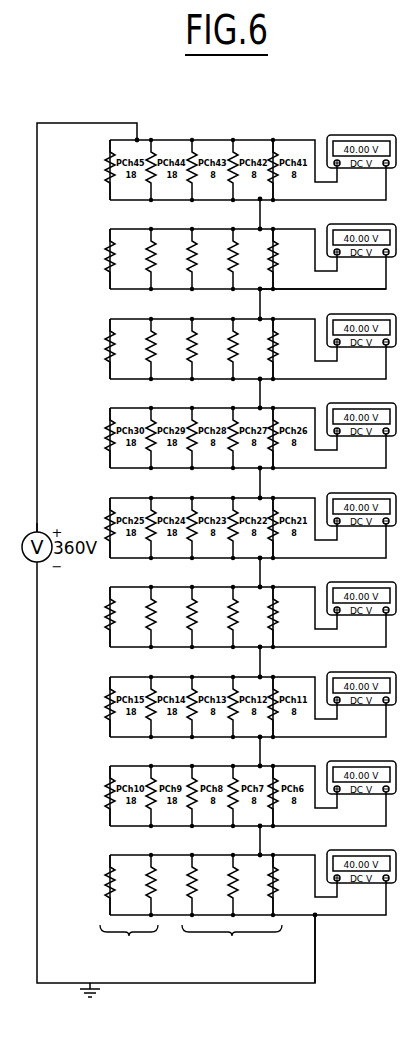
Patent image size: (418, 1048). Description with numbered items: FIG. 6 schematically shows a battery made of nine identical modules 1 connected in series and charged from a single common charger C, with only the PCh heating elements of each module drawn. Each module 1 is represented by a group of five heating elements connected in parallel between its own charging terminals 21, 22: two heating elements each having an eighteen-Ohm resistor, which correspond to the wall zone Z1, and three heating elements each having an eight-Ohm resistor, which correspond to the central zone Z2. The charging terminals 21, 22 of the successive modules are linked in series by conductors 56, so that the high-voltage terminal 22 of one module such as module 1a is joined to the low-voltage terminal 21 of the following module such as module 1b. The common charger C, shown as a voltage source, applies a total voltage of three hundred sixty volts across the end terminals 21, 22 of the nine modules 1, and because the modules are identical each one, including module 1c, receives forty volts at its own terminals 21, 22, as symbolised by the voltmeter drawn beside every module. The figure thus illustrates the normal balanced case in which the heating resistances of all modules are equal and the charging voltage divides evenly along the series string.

The module 1 is at (96, 617).
The module 1a is at (96, 349).
The module 1b is at (96, 259).
The module 1c is at (96, 885).
The charging terminal 21 is at (262, 203).
The charging terminal 22 is at (140, 138).
The conductor 56 is at (263, 292).
The common charger C is at (47, 535).
The wall heating zone Z1 is at (129, 940).
The central heating zone Z2 is at (232, 940).